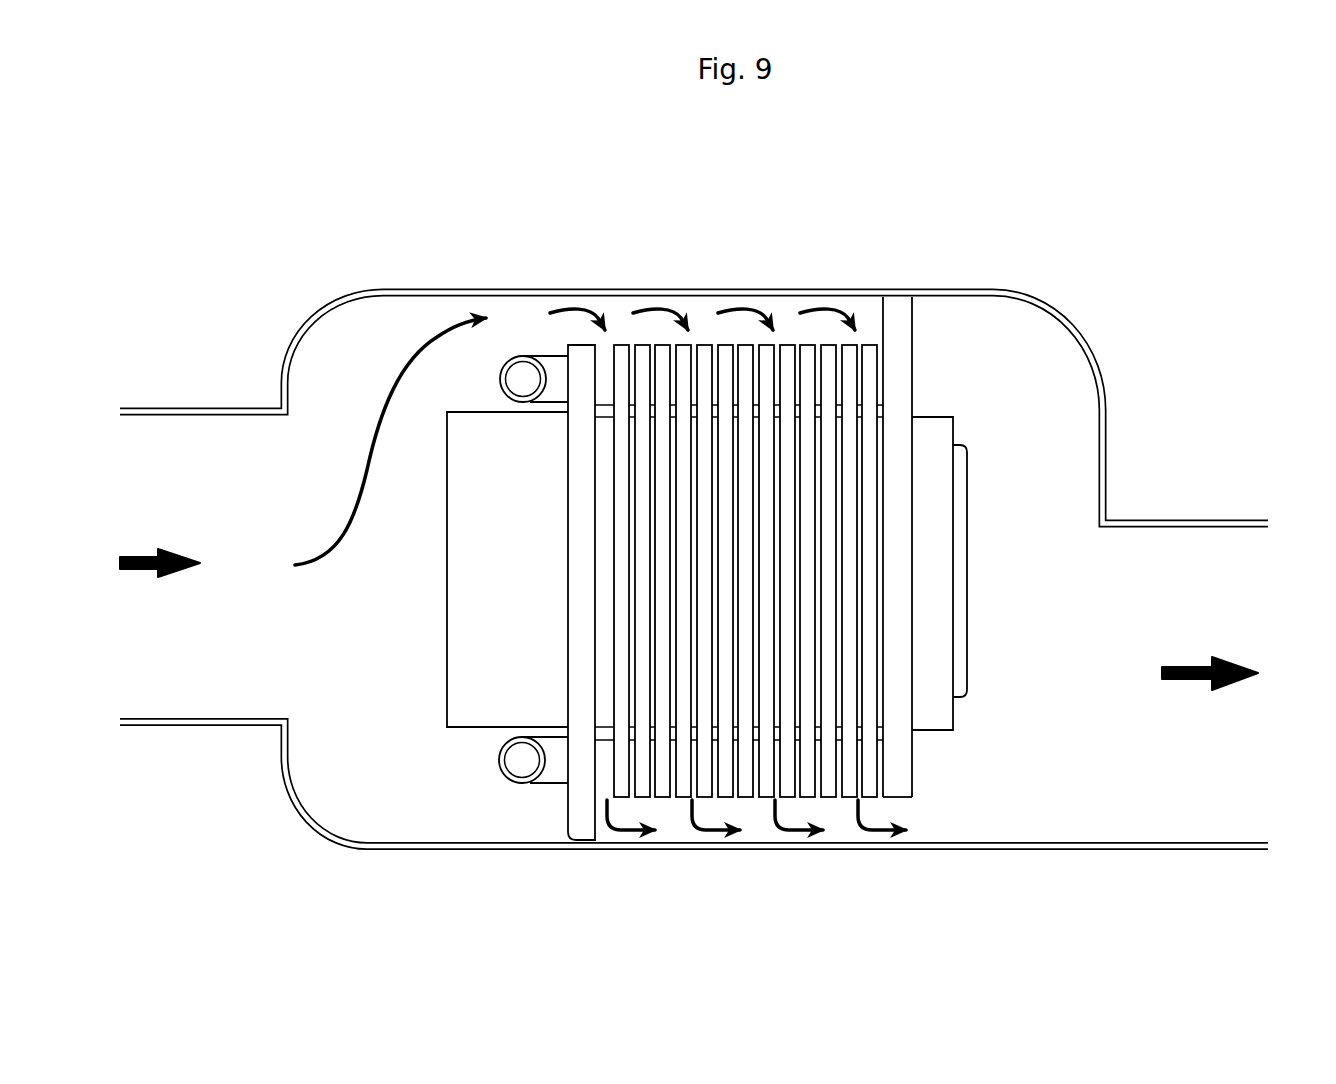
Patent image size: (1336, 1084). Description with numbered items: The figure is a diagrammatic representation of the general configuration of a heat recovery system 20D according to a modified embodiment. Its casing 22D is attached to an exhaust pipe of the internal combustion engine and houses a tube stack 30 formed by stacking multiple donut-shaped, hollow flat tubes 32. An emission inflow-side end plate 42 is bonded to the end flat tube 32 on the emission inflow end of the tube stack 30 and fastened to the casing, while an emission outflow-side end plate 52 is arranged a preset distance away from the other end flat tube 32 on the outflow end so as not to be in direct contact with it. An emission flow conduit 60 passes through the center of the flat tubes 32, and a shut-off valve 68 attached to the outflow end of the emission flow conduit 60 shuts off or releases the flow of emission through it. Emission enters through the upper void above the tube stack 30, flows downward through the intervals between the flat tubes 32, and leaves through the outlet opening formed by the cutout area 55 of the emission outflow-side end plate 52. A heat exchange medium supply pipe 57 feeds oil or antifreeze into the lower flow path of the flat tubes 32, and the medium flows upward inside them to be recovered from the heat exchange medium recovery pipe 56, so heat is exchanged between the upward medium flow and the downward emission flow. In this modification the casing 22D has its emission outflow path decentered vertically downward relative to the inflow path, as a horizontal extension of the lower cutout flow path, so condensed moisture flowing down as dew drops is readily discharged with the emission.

The heat recovery system 20D is at (694, 515).
The casing 22D is at (413, 291).
The tube stack 30 is at (739, 490).
The flat tube 32 is at (871, 243).
The emission inflow-side end plate 42 is at (583, 383).
The emission outflow-side end plate 52 is at (916, 568).
The cutout area 55 is at (902, 798).
The heat exchange medium recovery pipe 56 is at (540, 355).
The heat exchange medium supply pipe 57 is at (548, 785).
The emission flow conduit 60 is at (486, 394).
The shut-off valve 68 is at (967, 489).